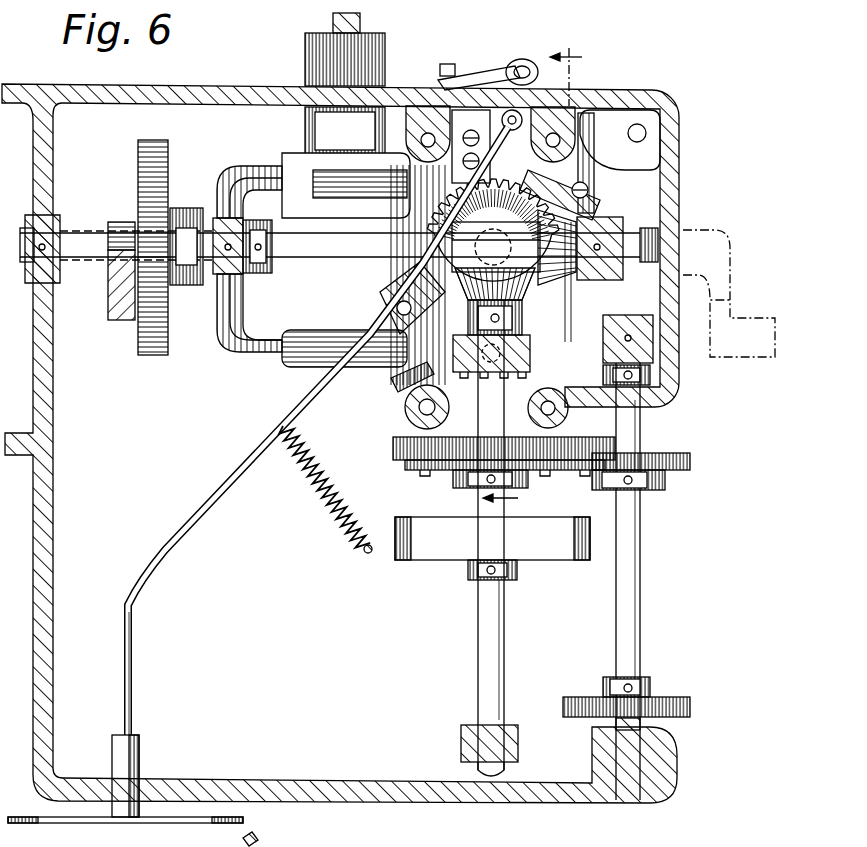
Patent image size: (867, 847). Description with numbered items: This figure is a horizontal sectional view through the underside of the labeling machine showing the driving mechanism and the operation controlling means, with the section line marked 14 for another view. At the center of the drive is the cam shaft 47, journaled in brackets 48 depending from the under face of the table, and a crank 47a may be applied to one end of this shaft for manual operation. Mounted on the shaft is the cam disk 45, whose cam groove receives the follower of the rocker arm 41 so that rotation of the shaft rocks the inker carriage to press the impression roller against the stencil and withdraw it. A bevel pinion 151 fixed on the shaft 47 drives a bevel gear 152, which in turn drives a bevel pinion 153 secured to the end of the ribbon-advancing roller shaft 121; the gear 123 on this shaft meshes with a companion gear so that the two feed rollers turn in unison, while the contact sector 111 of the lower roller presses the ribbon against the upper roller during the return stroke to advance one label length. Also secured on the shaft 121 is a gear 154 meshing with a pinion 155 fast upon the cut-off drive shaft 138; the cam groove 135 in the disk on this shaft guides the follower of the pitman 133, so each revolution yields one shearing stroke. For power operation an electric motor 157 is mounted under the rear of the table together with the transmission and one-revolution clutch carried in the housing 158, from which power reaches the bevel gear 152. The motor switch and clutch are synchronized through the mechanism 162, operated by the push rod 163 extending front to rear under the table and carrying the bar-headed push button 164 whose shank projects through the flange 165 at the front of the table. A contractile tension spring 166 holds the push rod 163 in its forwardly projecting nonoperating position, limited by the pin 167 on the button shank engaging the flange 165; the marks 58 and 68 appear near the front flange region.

The section line 14 is at (532, 268).
The rocker arm 41 is at (118, 308).
The cam disk 45 is at (153, 185).
The shaft 47 is at (76, 240).
The crank 47a is at (709, 250).
The brackets 48 is at (218, 222).
The base 58 is at (337, 836).
The support 68 is at (265, 835).
The drum 111 is at (423, 561).
The ribbon-advancing roller shaft 121 is at (492, 641).
The gear 123 is at (393, 442).
The pitman 133 is at (650, 724).
The cam groove 135 is at (668, 705).
The rotary shaft 138 is at (630, 601).
The bevel pinion 151 is at (528, 338).
The bevel gear 152 is at (440, 214).
The bevel pinion 153 is at (453, 352).
The gear 154 is at (406, 460).
The pinion 155 is at (690, 463).
The electric motor 157 is at (226, 338).
The housing 158 is at (428, 375).
The synchronizing mechanism 162 is at (514, 62).
The push rod 163 is at (168, 556).
The push button 164 is at (106, 826).
The flange 165 is at (275, 781).
The tension spring 166 is at (335, 522).
The pin 167 is at (143, 778).